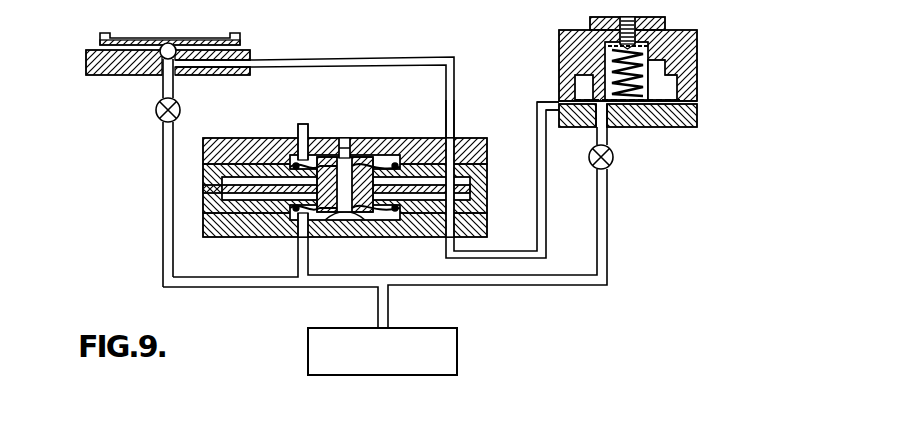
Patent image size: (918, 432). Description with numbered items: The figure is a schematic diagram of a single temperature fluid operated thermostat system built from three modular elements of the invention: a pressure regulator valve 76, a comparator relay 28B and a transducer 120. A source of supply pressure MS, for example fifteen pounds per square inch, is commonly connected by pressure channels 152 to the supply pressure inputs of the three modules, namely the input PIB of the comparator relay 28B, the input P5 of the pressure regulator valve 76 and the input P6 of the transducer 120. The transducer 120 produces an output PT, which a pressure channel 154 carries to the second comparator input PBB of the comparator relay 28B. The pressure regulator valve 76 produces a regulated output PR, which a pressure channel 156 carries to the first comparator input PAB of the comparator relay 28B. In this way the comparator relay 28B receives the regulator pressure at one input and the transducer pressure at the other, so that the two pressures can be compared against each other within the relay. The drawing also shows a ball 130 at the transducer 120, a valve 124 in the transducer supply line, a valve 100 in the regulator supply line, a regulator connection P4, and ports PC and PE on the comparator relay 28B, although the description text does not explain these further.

The transducer 120 is at (95, 31).
The ball 130 is at (185, 24).
The valve 124 is at (156, 108).
The pressure channels 152 is at (163, 216).
The pressure channel 154 is at (397, 57).
The pressure channel 156 is at (537, 171).
The comparator relay 28B is at (251, 131).
The pressure regulator valve 76 is at (741, 55).
The valve 100 is at (613, 159).
The transducer output PT is at (252, 59).
The supply pressure input of the transducer P6 is at (163, 148).
The supply pressure input of the pressure regulator P5 is at (607, 197).
The pressure line P4 is at (630, 130).
The control pressure port PC is at (305, 128).
The exhaust pressure port PE is at (342, 139).
The second comparator input PBB is at (455, 128).
The first comparator input PAB is at (446, 254).
The supply pressure input of the comparator relay PIB is at (298, 266).
The output of the pressure regulator PR is at (553, 100).
The source of supply pressure MS is at (290, 361).